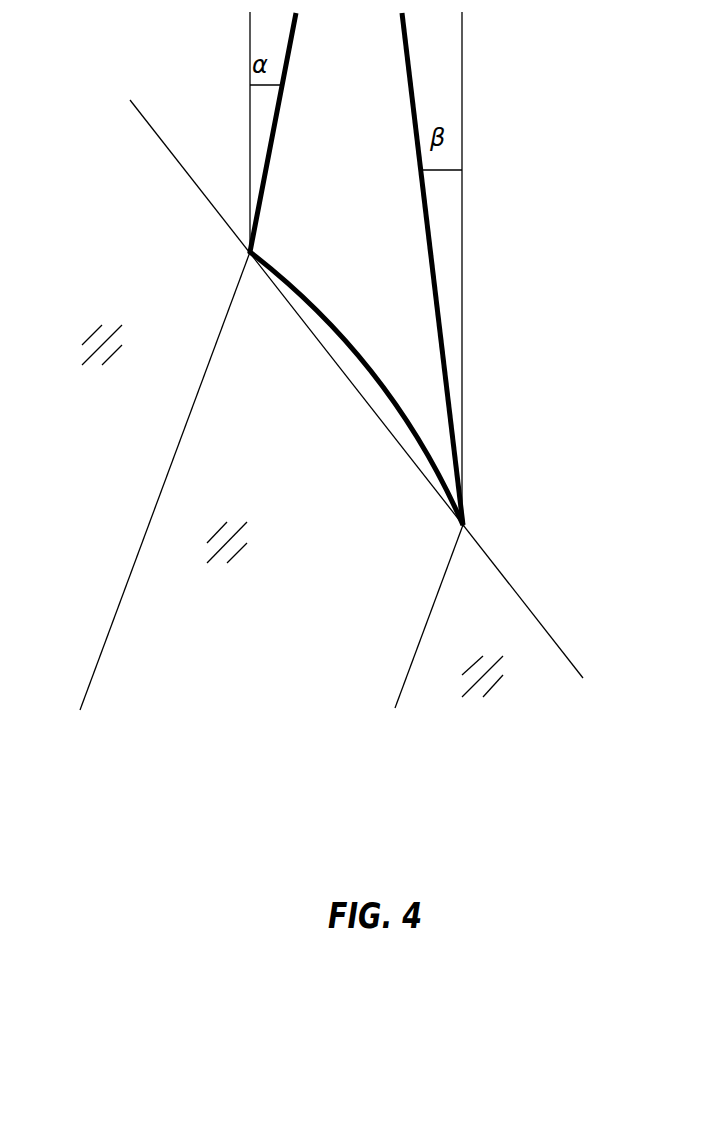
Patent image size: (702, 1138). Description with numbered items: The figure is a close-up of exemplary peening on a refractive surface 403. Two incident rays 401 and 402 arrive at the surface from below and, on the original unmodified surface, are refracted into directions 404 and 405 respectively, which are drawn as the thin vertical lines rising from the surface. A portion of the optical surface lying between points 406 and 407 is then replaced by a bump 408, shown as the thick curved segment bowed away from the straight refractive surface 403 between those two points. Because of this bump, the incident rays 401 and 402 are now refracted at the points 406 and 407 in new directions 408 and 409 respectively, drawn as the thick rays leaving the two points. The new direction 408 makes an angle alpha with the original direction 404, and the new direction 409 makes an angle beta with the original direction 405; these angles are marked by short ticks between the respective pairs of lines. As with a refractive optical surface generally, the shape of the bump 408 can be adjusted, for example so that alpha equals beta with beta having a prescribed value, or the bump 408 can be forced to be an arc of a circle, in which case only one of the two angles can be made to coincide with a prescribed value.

The incident ray 401 is at (125, 525).
The incident ray 402 is at (392, 675).
The refractive surface 403 is at (146, 144).
The refraction direction 404 is at (233, 45).
The refraction direction 405 is at (479, 82).
The point 406 is at (234, 254).
The point 407 is at (484, 525).
The bump 408 is at (298, 155).
The refraction direction 409 is at (386, 86).